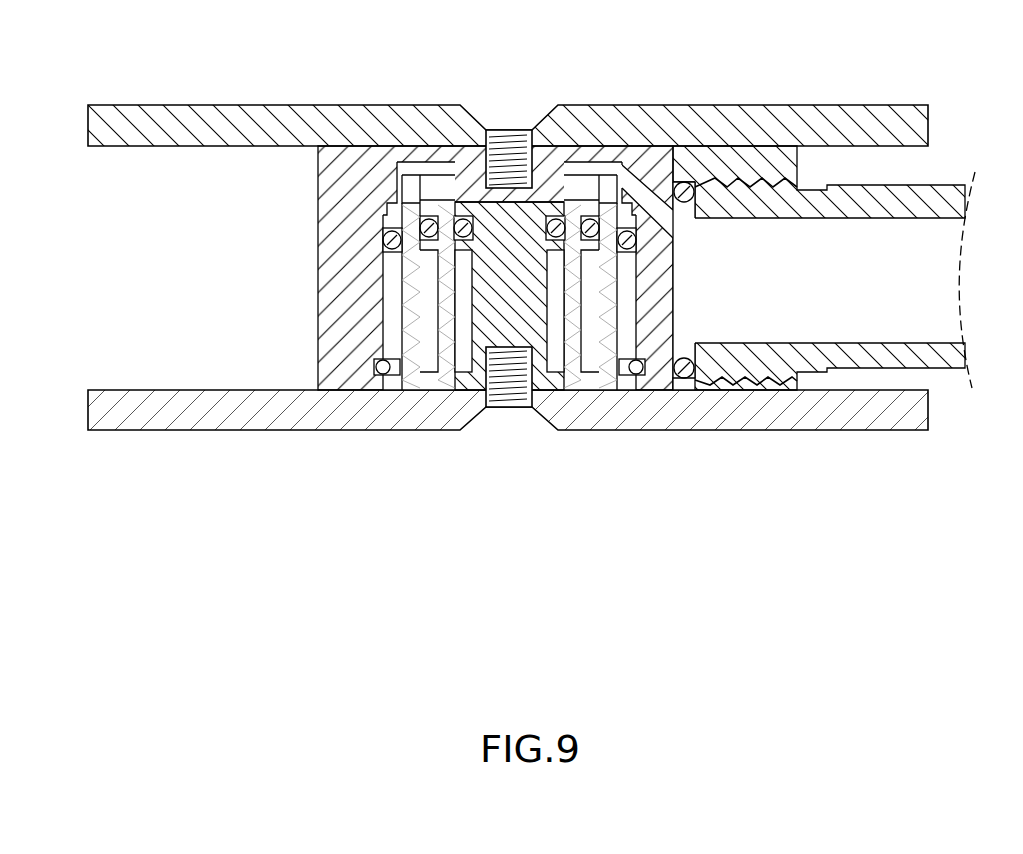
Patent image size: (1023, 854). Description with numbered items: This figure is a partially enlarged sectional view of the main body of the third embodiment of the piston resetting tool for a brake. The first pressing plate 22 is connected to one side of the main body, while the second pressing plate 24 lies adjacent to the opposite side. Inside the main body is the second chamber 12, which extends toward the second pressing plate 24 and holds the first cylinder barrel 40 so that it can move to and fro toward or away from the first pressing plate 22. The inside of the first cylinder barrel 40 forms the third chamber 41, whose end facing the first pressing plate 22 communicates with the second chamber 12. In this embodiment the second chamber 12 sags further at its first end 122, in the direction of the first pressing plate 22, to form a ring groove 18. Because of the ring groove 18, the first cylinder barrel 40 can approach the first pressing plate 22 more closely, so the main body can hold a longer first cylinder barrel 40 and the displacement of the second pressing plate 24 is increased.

The second chamber 12 is at (428, 168).
The first end 122 is at (542, 200).
The ring groove 18 is at (623, 160).
The first pressing plate 22 is at (854, 118).
The second pressing plate 24 is at (772, 415).
The first cylinder barrel 40 is at (412, 312).
The third chamber 41 is at (428, 326).